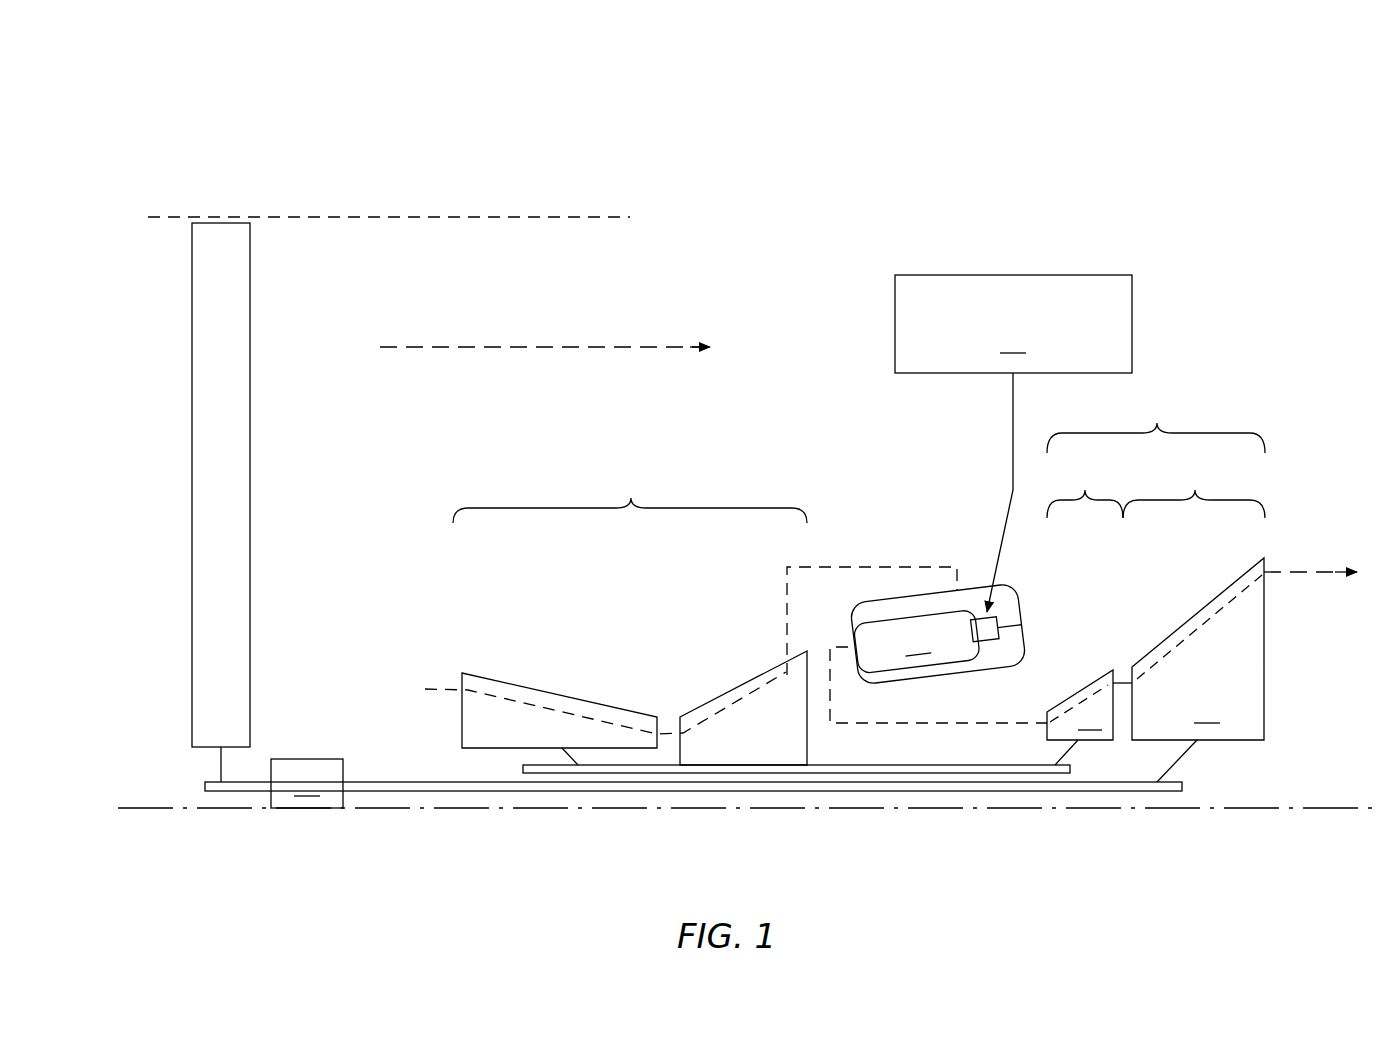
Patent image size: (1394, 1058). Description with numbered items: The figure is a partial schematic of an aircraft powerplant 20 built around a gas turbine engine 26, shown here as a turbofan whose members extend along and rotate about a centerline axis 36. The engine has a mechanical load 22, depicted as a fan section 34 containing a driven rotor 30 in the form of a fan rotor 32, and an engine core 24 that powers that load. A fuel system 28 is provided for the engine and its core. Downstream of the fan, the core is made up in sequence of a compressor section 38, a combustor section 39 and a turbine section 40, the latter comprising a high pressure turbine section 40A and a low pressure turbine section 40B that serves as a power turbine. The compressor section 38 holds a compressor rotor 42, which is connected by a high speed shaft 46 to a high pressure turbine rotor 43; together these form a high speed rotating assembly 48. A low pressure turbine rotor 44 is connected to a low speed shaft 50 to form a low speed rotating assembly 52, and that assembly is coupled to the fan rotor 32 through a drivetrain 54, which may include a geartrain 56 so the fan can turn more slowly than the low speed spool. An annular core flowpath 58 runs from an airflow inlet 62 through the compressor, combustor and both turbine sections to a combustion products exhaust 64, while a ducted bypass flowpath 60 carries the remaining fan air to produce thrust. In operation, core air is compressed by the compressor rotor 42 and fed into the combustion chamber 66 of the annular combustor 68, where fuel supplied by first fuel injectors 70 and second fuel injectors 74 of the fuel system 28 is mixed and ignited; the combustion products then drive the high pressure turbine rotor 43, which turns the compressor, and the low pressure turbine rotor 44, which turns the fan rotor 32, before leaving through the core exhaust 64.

The powerplant 20 is at (738, 475).
The gas turbine engine 26 is at (165, 128).
The mechanical load 22 is at (389, 167).
The fan section 34 is at (225, 210).
The driven rotor 30 is at (172, 502).
The fan rotor 32 is at (218, 712).
The axis 36 is at (145, 812).
The drivetrain 54 is at (307, 736).
The geartrain 56 is at (305, 750).
The low speed shaft 50 is at (833, 791).
The high speed shaft 46 is at (900, 773).
The bypass flowpath 60 is at (492, 347).
The engine core 24 is at (803, 410).
The compressor section 38 is at (569, 615).
The compressor rotor 42 is at (700, 710).
The airflow inlet 62 is at (415, 688).
The core flowpath 58 is at (787, 592).
The combustor section 39 is at (922, 545).
The combustor 68 is at (1005, 670).
The combustion chamber 66 is at (916, 641).
The first fuel injectors 70 is at (997, 628).
The second fuel injectors 74 is at (997, 628).
The fuel system 28 is at (1013, 443).
The turbine section 40 is at (1168, 622).
The high pressure turbine section 40A is at (1086, 655).
The low pressure turbine section 40B is at (1201, 628).
The high pressure turbine rotor 43 is at (1080, 705).
The low pressure turbine rotor 44 is at (1198, 649).
The high speed rotating assembly 48 is at (1085, 757).
The low speed rotating assembly 52 is at (1192, 767).
The combustion products exhaust 64 is at (1357, 572).